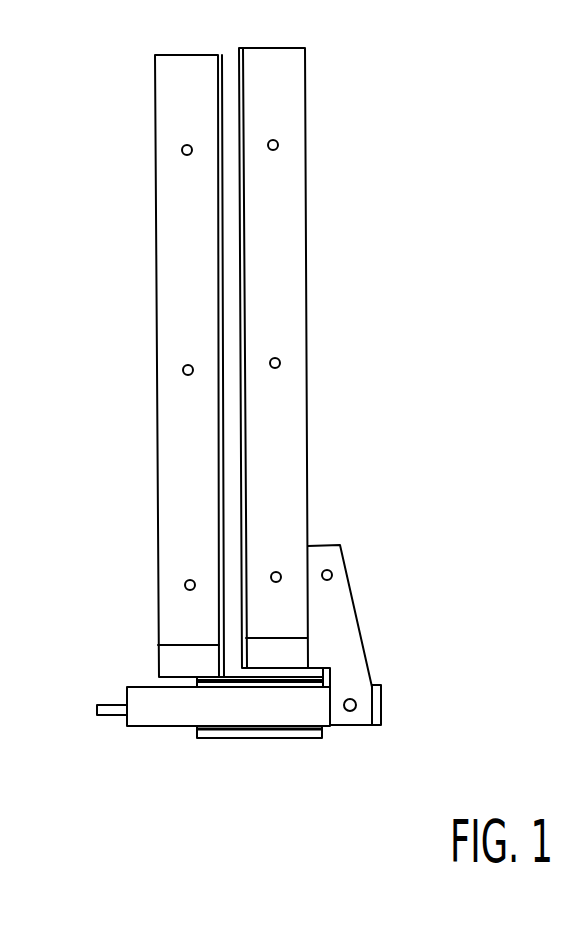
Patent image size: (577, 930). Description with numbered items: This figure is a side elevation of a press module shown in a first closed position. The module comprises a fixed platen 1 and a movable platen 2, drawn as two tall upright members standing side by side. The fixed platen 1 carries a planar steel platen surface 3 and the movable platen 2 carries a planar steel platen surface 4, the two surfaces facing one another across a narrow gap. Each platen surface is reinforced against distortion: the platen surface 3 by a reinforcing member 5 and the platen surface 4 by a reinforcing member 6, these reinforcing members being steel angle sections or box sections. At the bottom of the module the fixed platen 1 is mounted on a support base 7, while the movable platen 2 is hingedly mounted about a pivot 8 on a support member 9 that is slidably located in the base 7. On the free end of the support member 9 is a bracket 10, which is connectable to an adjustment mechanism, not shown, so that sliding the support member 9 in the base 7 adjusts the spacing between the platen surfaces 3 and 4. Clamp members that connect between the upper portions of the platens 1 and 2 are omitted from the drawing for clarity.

The fixed platen 1 is at (173, 185).
The movable platen 2 is at (270, 193).
The platen surface 3 is at (225, 353).
The platen surface 4 is at (242, 402).
The reinforcing member 5 is at (190, 523).
The reinforcing member 6 is at (283, 497).
The support base 7 is at (235, 735).
The pivot 8 is at (357, 705).
The support member 9 is at (293, 707).
The bracket 10 is at (119, 697).